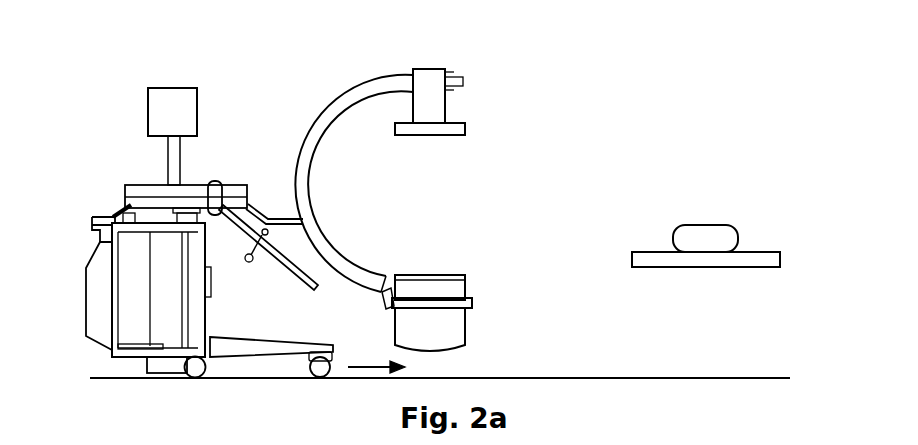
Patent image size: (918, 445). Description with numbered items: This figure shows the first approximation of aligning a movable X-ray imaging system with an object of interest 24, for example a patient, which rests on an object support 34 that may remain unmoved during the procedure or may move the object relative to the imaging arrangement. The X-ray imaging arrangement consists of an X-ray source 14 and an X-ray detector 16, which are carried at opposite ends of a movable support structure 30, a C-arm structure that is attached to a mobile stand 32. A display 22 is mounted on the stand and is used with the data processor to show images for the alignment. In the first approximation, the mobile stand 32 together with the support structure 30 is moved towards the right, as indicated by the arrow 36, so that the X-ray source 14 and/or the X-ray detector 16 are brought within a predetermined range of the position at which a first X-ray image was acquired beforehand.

The X-ray source 14 is at (457, 283).
The X-ray detector 16 is at (458, 126).
The display 22 is at (175, 88).
The object of interest 24 is at (707, 224).
The movable support structure 30 is at (310, 141).
The mobile stand 32 is at (115, 210).
The object support 34 is at (758, 258).
The arrow 36 is at (373, 365).